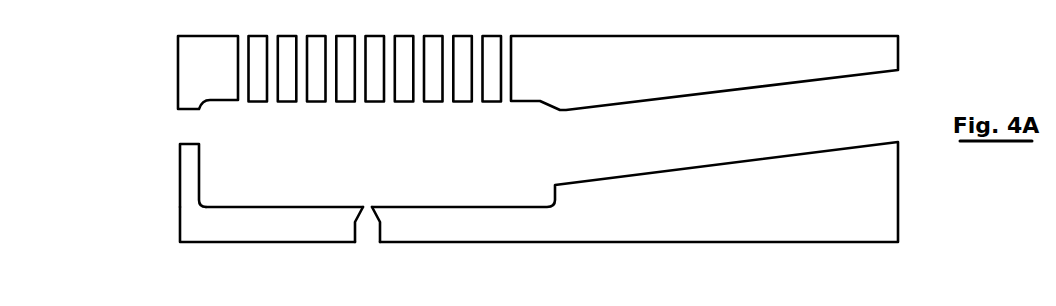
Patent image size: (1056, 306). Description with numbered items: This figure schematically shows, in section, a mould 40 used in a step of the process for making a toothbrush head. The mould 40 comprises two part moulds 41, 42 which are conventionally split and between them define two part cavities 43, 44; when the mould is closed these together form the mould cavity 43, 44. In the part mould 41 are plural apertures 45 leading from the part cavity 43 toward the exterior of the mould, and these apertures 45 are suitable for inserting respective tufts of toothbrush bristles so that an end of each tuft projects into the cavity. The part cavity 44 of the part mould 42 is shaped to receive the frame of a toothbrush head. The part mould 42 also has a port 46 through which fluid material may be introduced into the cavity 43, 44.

The mould 40 is at (170, 163).
The part mould 41 is at (178, 83).
The part mould 42 is at (178, 222).
The part cavity 43 is at (538, 107).
The part cavity 44 is at (545, 198).
The apertures 45 is at (273, 102).
The port 46 is at (367, 237).